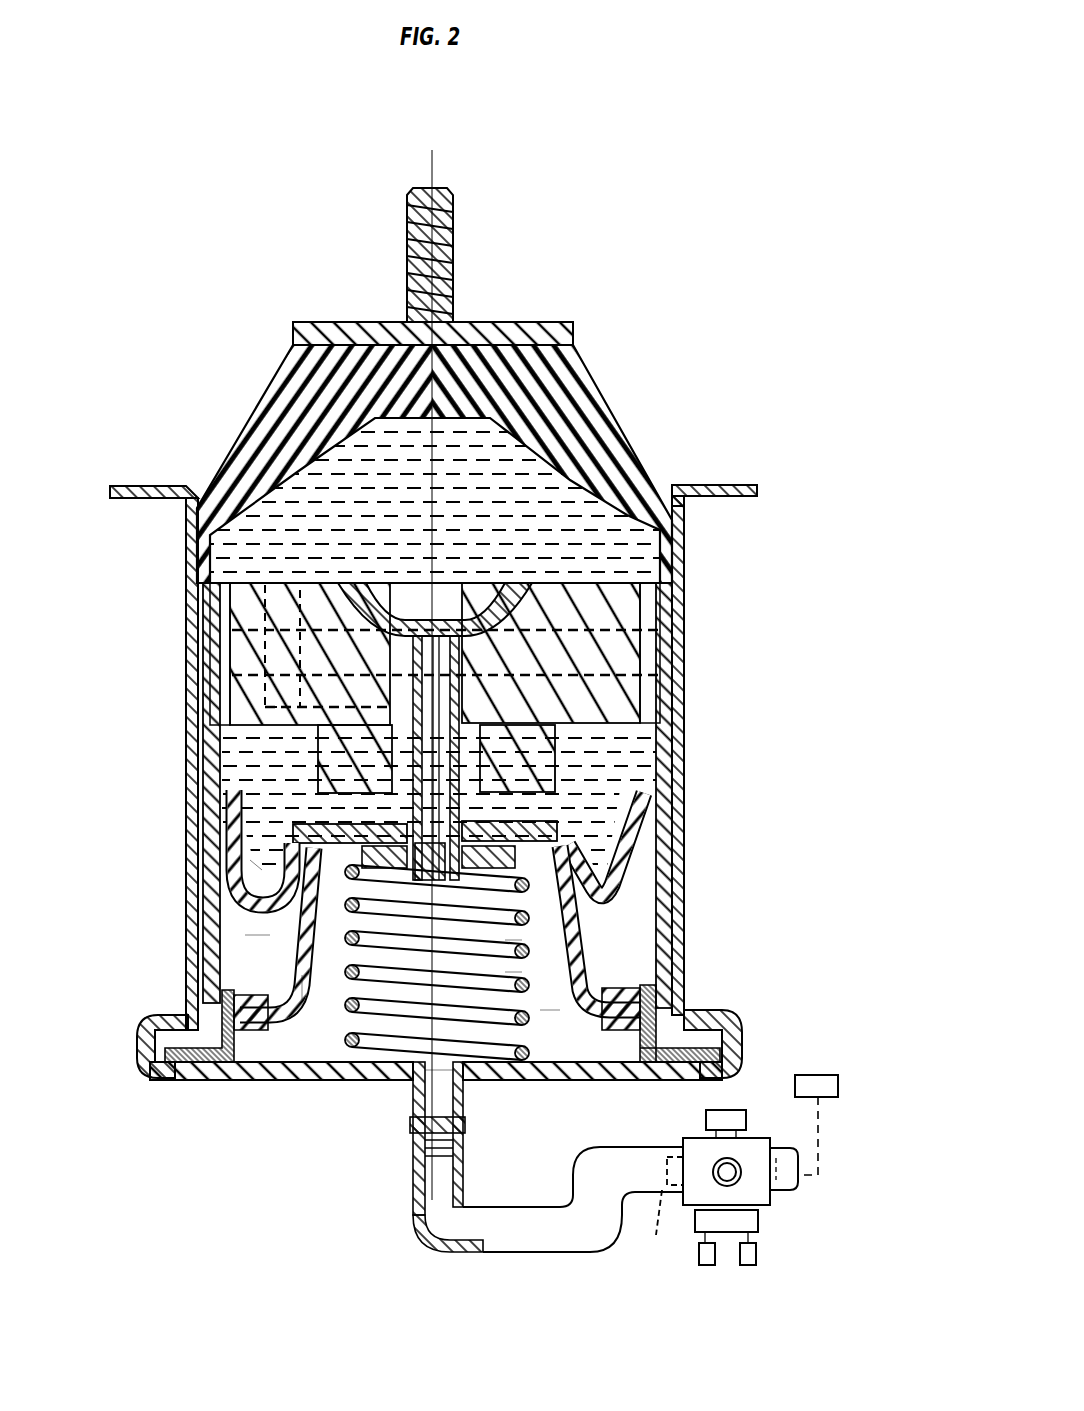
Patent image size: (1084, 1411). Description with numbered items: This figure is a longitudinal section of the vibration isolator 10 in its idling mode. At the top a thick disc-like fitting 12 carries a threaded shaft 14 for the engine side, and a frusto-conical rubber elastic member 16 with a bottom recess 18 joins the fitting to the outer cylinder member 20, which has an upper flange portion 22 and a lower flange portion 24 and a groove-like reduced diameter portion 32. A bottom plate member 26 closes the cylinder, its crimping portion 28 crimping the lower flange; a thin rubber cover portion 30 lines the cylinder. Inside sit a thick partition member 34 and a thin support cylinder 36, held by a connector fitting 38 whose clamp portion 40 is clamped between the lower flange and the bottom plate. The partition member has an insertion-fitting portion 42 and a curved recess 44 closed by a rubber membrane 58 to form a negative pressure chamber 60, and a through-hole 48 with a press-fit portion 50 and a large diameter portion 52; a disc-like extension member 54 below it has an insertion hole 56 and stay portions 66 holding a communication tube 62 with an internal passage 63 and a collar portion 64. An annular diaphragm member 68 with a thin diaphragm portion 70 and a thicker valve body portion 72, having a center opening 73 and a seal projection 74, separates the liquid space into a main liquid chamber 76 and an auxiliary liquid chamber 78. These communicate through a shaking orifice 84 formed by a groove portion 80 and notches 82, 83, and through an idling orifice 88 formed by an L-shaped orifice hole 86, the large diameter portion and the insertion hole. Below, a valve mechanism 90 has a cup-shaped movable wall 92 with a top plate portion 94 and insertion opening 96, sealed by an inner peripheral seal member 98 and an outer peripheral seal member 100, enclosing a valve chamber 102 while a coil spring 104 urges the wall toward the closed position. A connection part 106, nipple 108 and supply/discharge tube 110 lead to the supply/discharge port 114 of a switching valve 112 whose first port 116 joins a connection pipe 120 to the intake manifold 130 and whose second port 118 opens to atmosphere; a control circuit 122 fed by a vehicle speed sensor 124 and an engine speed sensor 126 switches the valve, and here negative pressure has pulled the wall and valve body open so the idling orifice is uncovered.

The vibration isolator 10 is at (668, 176).
The fitting 12 is at (573, 322).
The threaded shaft 14 is at (453, 192).
The elastic member 16 is at (615, 400).
The recess 18 is at (385, 430).
The outer cylinder member 20 is at (684, 736).
The upper flange portion 22 is at (735, 485).
The lower flange portion 24 is at (735, 1012).
The bottom plate member 26 is at (255, 1080).
The crimping portion 28 is at (150, 1015).
The cover portion 30 is at (186, 902).
The reduced diameter portion 32 is at (186, 572).
The partition member 34 is at (575, 583).
The support cylinder 36 is at (684, 866).
The connector fitting 38 is at (243, 1020).
The clamp portion 40 is at (165, 1080).
The insertion-fitting portion 42 is at (500, 583).
The recess 44 is at (445, 583).
The through-hole 48 is at (556, 745).
The press-fit portion 50 is at (412, 616).
The large diameter portion 52 is at (320, 740).
The extension member 54 is at (558, 792).
The insertion hole 56 is at (318, 761).
The membrane 58 is at (392, 600).
The negative pressure chamber 60 is at (356, 583).
The communication tube 62 is at (556, 772).
The internal passage 63 is at (440, 618).
The collar portion 64 is at (312, 954).
The stay portions 66 is at (318, 791).
The diaphragm member 68 is at (256, 932).
The diaphragm portion 70 is at (252, 862).
The valve body portion 72 is at (286, 890).
The center opening 73 is at (380, 828).
The seal projection 74 is at (480, 828).
The main liquid chamber 76 is at (318, 480).
The auxiliary liquid chamber 78 is at (684, 792).
The groove portion 80 is at (684, 596).
The notch portion 82 is at (226, 622).
The notch 83 is at (660, 692).
The shaking orifice 84 is at (654, 660).
The orifice hole 86 is at (270, 602).
The idling orifice 88 is at (272, 652).
The valve mechanism 90 is at (596, 958).
The movable wall 92 is at (586, 976).
The top plate portion 94 is at (512, 946).
The insertion opening 96 is at (310, 985).
The inner peripheral seal member 98 is at (510, 975).
The outer peripheral seal member 100 is at (552, 1012).
The valve chamber 102 is at (555, 1078).
The coil spring 104 is at (413, 1078).
The connection part 106 is at (463, 1094).
The nipple 108 is at (465, 1126).
The supply/discharge tube 110 is at (549, 1240).
The switching valve 112 is at (752, 1134).
The supply/discharge port 114 is at (658, 1204).
The first port 116 is at (782, 1150).
The second port 118 is at (712, 1162).
The connection pipe 120 is at (798, 1174).
The control circuit 122 is at (760, 1220).
The vehicle speed sensor 124 is at (707, 1265).
The engine speed sensor 126 is at (752, 1265).
The intake manifold 130 is at (818, 1075).